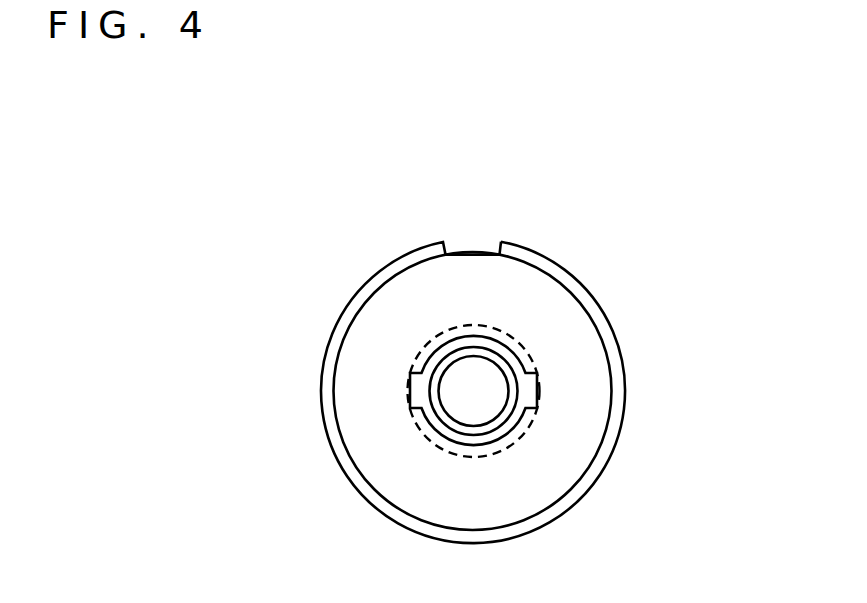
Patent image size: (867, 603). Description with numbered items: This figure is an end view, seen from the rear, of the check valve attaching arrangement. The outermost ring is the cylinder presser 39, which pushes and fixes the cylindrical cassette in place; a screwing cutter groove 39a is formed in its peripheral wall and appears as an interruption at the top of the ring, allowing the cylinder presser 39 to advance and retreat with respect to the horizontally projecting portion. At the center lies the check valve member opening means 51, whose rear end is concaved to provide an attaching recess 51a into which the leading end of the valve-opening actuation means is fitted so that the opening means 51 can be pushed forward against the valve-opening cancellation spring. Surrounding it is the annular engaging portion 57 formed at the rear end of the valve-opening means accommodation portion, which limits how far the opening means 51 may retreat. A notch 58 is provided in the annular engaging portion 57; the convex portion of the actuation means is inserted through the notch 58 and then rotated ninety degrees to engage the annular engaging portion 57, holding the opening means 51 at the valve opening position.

The cylinder presser 39 is at (553, 298).
The screwing cutter groove 39a is at (477, 252).
The check valve member opening means 51 is at (520, 436).
The attaching recess 51a is at (490, 387).
The annular engaging portion 57 is at (422, 353).
The notch 58 is at (412, 396).